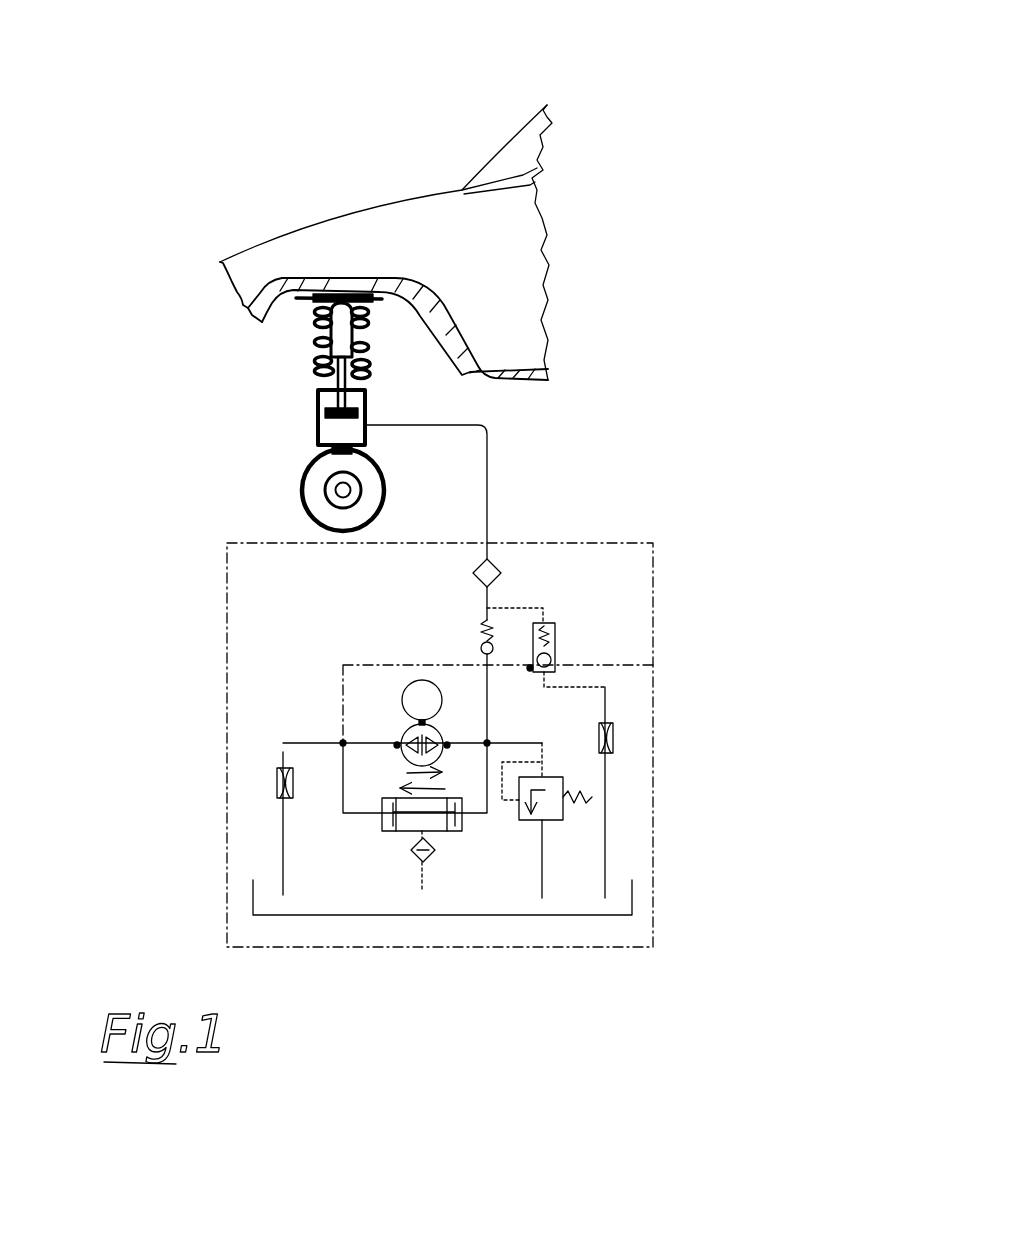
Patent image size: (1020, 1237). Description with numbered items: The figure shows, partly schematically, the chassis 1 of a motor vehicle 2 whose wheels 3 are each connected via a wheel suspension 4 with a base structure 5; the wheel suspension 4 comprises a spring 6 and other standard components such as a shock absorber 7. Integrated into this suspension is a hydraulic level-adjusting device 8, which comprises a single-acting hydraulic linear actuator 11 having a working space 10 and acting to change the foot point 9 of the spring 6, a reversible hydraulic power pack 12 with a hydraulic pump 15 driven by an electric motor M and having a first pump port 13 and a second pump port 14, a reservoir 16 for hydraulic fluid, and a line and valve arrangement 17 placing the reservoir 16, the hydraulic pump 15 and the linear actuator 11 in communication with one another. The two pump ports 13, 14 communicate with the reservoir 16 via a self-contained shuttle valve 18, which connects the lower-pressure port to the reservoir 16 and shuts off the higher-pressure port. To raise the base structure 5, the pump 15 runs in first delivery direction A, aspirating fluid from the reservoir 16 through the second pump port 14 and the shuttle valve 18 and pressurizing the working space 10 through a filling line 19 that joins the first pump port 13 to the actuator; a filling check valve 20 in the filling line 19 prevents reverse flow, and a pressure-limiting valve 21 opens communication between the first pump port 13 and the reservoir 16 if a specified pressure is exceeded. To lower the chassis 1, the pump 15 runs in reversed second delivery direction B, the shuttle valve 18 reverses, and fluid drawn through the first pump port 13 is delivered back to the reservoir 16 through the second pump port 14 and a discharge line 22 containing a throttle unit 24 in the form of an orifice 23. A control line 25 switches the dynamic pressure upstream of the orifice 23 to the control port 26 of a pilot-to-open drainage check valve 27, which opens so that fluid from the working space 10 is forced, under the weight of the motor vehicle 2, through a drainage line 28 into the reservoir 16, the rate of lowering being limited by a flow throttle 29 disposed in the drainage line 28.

The chassis 1 is at (223, 390).
The motor vehicle 2 is at (432, 130).
The wheel 3 is at (300, 495).
The wheel suspension 4 is at (275, 360).
The base structure 5 is at (447, 338).
The spring 6 is at (365, 330).
The shock absorber 7 is at (340, 322).
The hydraulic level-adjusting device 8 is at (657, 478).
The foot point 9 is at (380, 366).
The working space 10 is at (324, 429).
The hydraulic linear actuator 11 is at (322, 423).
The hydraulic power pack 12 is at (387, 722).
The first pump port 13 is at (447, 743).
The second pump port 14 is at (397, 743).
The hydraulic pump 15 is at (442, 730).
The reservoir 16 is at (592, 915).
The line and valve arrangement 17 is at (602, 580).
The shuttle valve 18 is at (370, 832).
The filling line 19 is at (488, 702).
The filling check valve 20 is at (476, 632).
The pressure-limiting valve 21 is at (570, 823).
The discharge line 22 is at (283, 752).
The orifice 23 is at (275, 783).
The throttle unit 24 is at (270, 803).
The control line 25 is at (343, 665).
The control port 26 is at (527, 666).
The pilot-to-open drainage check valve 27 is at (560, 633).
The drainage line 28 is at (605, 708).
The flow throttle 29 is at (618, 750).